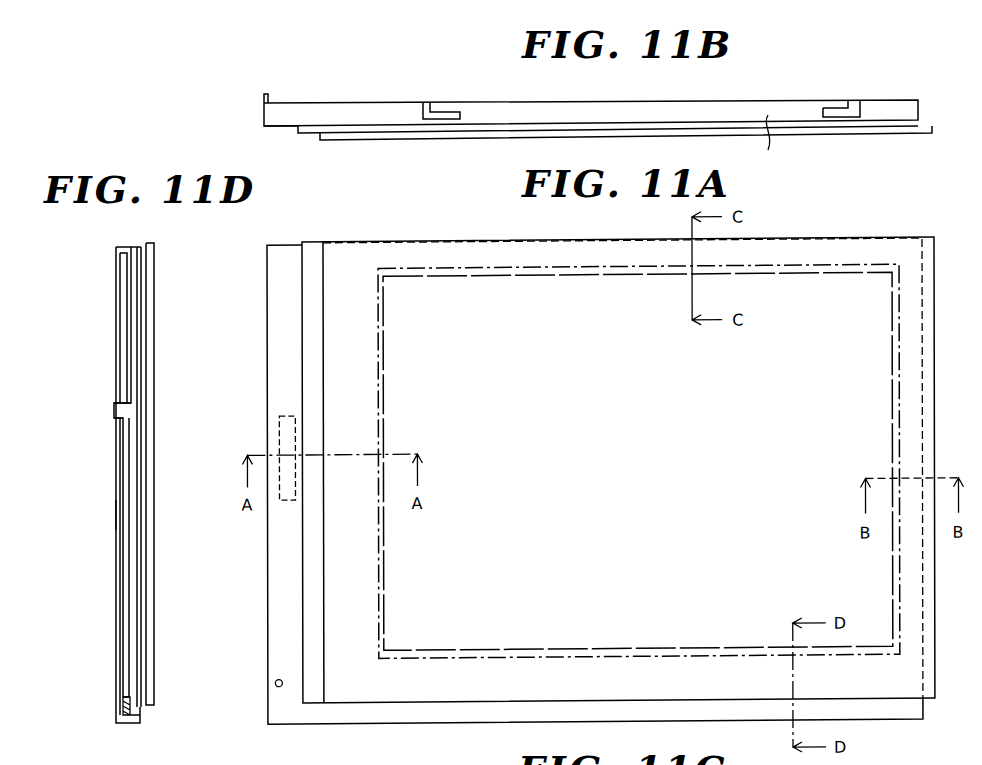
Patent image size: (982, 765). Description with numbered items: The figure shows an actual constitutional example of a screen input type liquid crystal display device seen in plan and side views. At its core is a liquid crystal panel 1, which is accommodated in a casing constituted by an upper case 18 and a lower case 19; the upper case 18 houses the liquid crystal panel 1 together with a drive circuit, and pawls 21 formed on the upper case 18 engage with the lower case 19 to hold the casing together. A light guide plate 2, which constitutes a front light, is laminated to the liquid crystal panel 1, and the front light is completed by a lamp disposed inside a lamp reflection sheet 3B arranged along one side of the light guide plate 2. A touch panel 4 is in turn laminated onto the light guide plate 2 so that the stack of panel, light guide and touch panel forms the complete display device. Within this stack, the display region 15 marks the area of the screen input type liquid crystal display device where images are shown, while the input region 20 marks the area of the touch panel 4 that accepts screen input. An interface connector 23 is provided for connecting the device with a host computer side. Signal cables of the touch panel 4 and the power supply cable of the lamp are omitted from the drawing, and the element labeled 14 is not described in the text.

In FIG. 11B, the liquid crystal panel 1 is at (786, 181).
In FIG. 11D, the liquid crystal panel 1 is at (137, 602).
In FIG. 11A, the liquid crystal panel 1 is at (395, 339).
In FIG. 11B, the light guide plate 2 is at (918, 120).
In FIG. 11A, the light guide plate 2 is at (400, 703).
In FIG. 11B, the lamp reflection sheet 3B is at (308, 133).
In FIG. 11B, the touch panel 4 is at (932, 133).
In FIG. 11D, the touch panel 4 is at (154, 243).
In FIG. 11A, the touch panel 4 is at (936, 683).
In FIG. 11D, the liquid crystal panel 14 is at (138, 247).
In FIG. 11A, the liquid crystal panel 14 is at (302, 597).
In FIG. 11A, the display region 15 is at (892, 345).
In FIG. 11B, the upper case 18 is at (279, 126).
In FIG. 11D, the upper case 18 is at (140, 717).
In FIG. 11A, the upper case 18 is at (281, 715).
In FIG. 11D, the lower case 19 is at (116, 513).
In FIG. 11A, the input region 20 is at (899, 387).
In FIG. 11B, the pawls 21 is at (445, 102).
In FIG. 11D, the pawls 21 is at (114, 412).
In FIG. 11A, the interface connector 23 is at (280, 432).